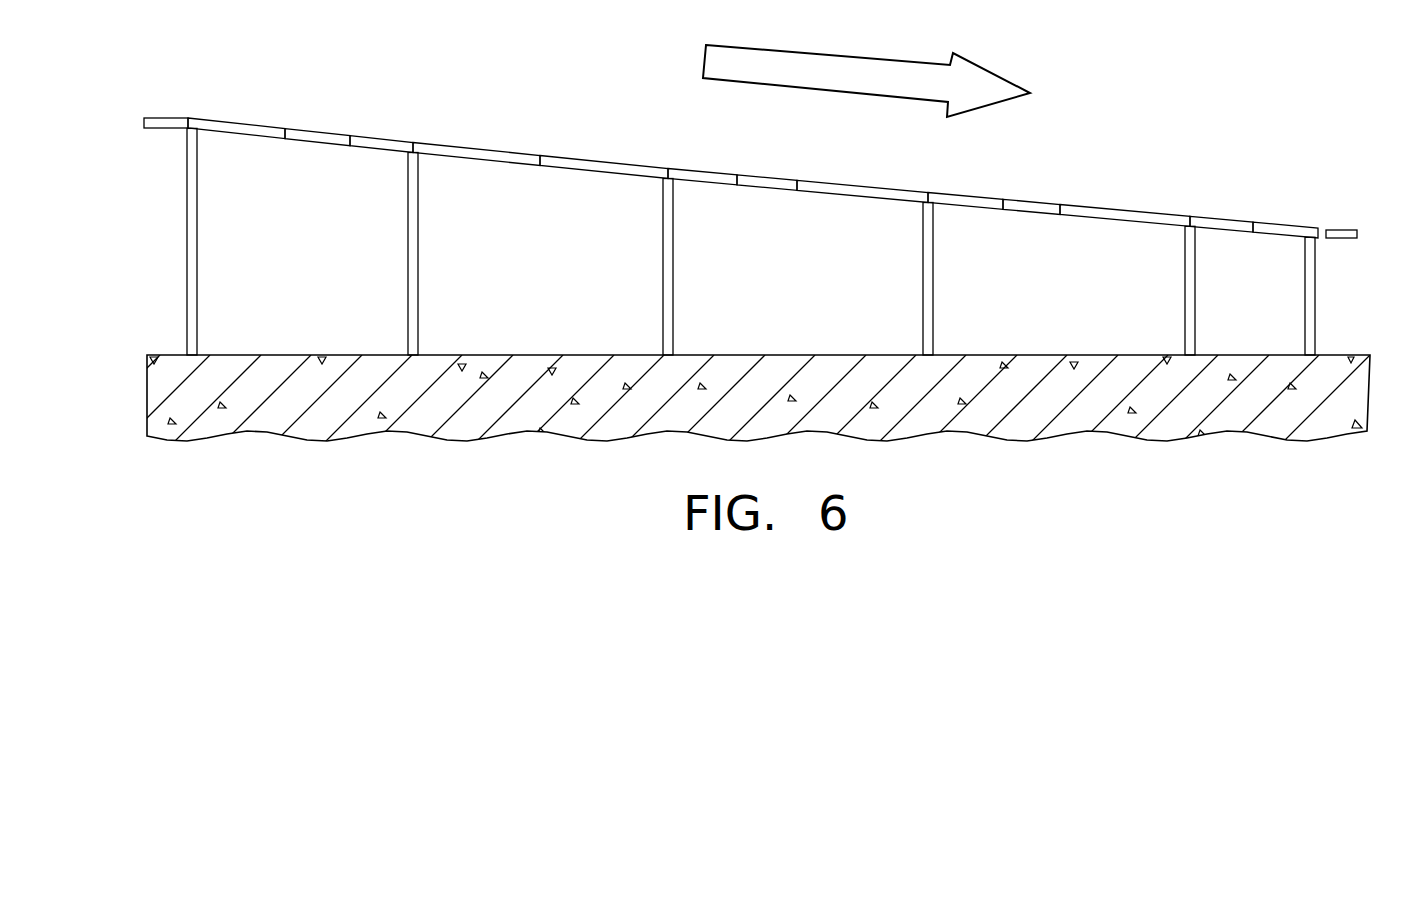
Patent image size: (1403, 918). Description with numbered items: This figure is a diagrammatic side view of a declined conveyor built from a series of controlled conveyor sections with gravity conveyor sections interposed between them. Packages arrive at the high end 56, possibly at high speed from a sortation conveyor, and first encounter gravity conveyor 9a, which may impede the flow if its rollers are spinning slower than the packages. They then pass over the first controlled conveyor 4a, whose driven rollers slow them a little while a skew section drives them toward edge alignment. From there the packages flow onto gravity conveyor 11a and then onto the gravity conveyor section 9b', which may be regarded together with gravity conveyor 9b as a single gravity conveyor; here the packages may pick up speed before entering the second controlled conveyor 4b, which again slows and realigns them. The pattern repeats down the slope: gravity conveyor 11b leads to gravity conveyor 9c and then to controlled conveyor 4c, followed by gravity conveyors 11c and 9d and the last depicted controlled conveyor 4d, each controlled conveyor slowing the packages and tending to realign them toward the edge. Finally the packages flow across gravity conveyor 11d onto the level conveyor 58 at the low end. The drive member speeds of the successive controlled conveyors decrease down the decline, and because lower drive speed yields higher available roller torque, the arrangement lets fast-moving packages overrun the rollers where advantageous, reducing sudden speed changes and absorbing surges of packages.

The high end 56 is at (168, 122).
The gravity conveyor 9a is at (243, 128).
The first controlled conveyor 4a is at (323, 137).
The gravity conveyor 11a is at (392, 140).
The gravity conveyor section 9b' is at (491, 122).
The gravity conveyor 9b is at (612, 137).
The second controlled conveyor 4b is at (710, 177).
The gravity conveyor 11b is at (780, 182).
The gravity conveyor 9c is at (877, 192).
The controlled conveyor 4c is at (977, 200).
The gravity conveyor 11c is at (1046, 204).
The gravity conveyor 9d is at (1142, 215).
The controlled conveyor 4d is at (1237, 222).
The gravity conveyor 11d is at (1303, 230).
The level conveyor 58 is at (1342, 240).